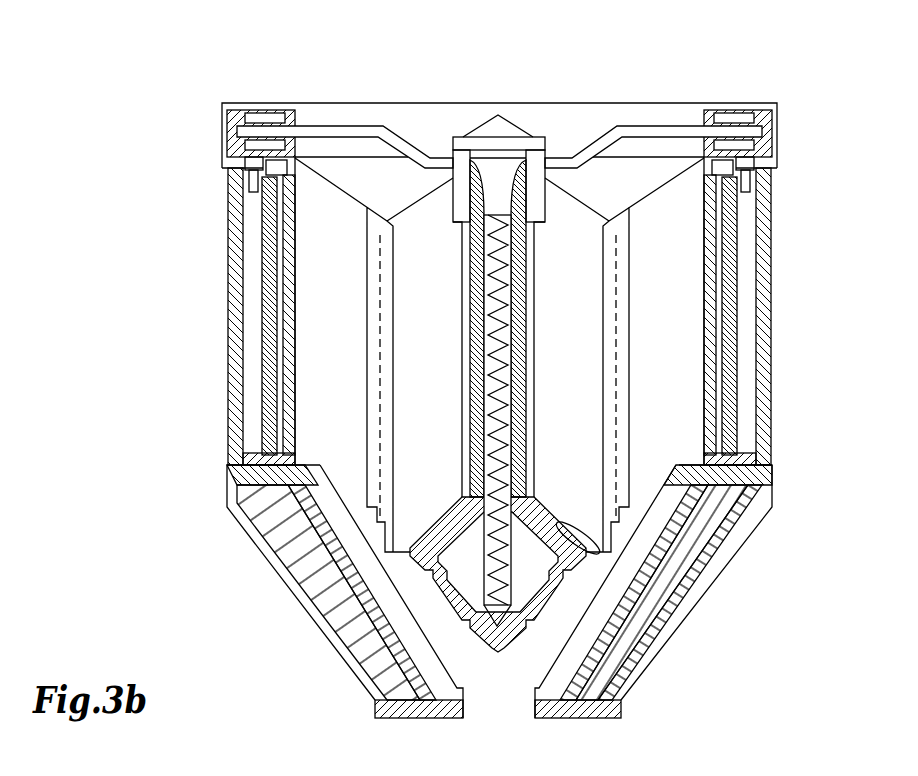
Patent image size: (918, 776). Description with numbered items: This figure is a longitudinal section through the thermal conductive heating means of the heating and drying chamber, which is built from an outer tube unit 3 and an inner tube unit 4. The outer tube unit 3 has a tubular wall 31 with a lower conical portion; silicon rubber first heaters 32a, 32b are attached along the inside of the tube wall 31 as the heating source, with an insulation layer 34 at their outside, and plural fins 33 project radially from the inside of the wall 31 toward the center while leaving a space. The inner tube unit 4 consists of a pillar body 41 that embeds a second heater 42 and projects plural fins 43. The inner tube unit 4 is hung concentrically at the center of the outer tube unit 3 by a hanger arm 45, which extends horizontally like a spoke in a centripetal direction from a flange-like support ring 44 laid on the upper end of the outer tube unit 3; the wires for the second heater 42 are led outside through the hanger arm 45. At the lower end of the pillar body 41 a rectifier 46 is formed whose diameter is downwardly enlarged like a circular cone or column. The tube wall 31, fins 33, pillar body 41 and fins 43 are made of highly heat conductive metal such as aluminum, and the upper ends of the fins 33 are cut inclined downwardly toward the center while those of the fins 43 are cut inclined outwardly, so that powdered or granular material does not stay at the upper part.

The outer tube unit 3 is at (776, 320).
The inner tube unit 4 is at (589, 199).
The tubular wall 31 is at (758, 252).
The first heater 32a is at (263, 228).
The first heater 32b is at (683, 533).
The fin 33 is at (668, 413).
The insulation layer 34 is at (267, 285).
The pillar body 41 is at (530, 252).
The second heater 42 is at (452, 188).
The fin 43 is at (410, 223).
The support ring 44 is at (731, 110).
The hanger arm 45 is at (670, 133).
The rectifier 46 is at (607, 547).